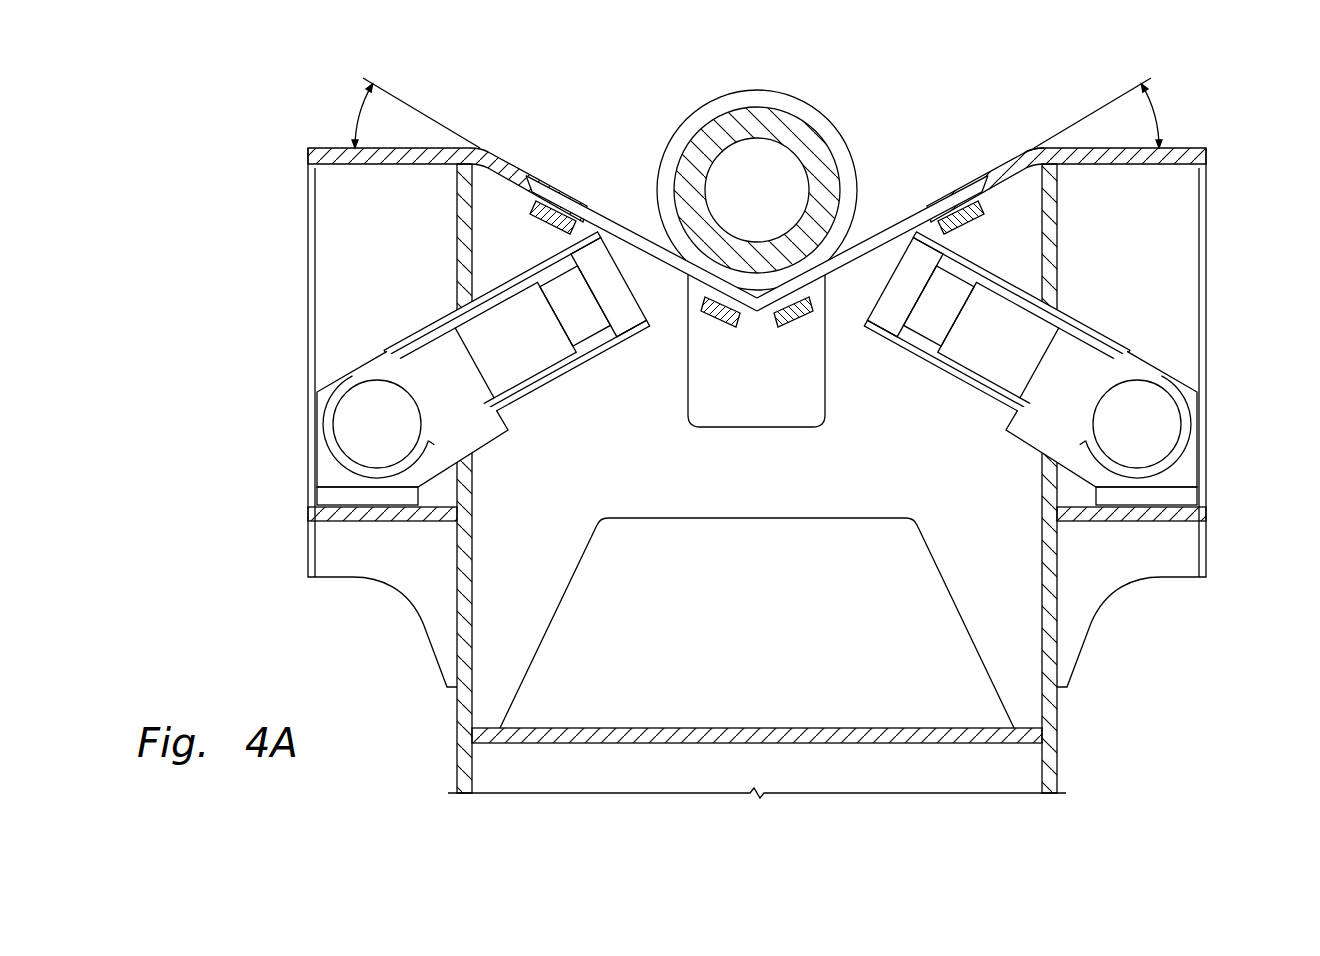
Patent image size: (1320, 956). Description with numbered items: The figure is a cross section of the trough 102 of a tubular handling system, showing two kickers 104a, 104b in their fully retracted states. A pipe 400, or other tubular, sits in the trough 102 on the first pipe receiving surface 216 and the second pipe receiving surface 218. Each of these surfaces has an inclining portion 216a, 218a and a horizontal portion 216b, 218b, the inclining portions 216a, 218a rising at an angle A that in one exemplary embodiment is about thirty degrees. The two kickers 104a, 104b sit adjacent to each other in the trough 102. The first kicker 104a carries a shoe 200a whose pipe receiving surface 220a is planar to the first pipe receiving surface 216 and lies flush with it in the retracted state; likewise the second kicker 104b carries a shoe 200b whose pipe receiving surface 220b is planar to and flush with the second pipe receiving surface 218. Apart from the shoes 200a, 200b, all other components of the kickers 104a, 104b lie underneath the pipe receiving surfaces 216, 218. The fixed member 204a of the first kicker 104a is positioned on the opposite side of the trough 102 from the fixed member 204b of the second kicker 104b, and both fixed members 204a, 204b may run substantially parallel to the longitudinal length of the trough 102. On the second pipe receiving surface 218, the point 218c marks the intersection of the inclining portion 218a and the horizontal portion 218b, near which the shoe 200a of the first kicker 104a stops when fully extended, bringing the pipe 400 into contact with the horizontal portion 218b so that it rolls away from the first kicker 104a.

The trough 102 is at (1062, 758).
The pipe 400 is at (757, 98).
The first pipe receiving surface 216 is at (388, 166).
The inclining portion 216a is at (542, 182).
The horizontal portion 216b is at (312, 149).
The second pipe receiving surface 218 is at (1127, 166).
The inclining portion 218a is at (972, 182).
The horizontal portion 218b is at (1183, 149).
The point 218c is at (1034, 147).
The shoe 200a is at (594, 211).
The shoe 200b is at (920, 211).
The pipe receiving surface 220a is at (628, 237).
The pipe receiving surface 220b is at (886, 237).
The fixed member 204a is at (374, 417).
The fixed member 204b is at (1140, 417).
The first kicker 104a is at (548, 388).
The second kicker 104b is at (966, 388).